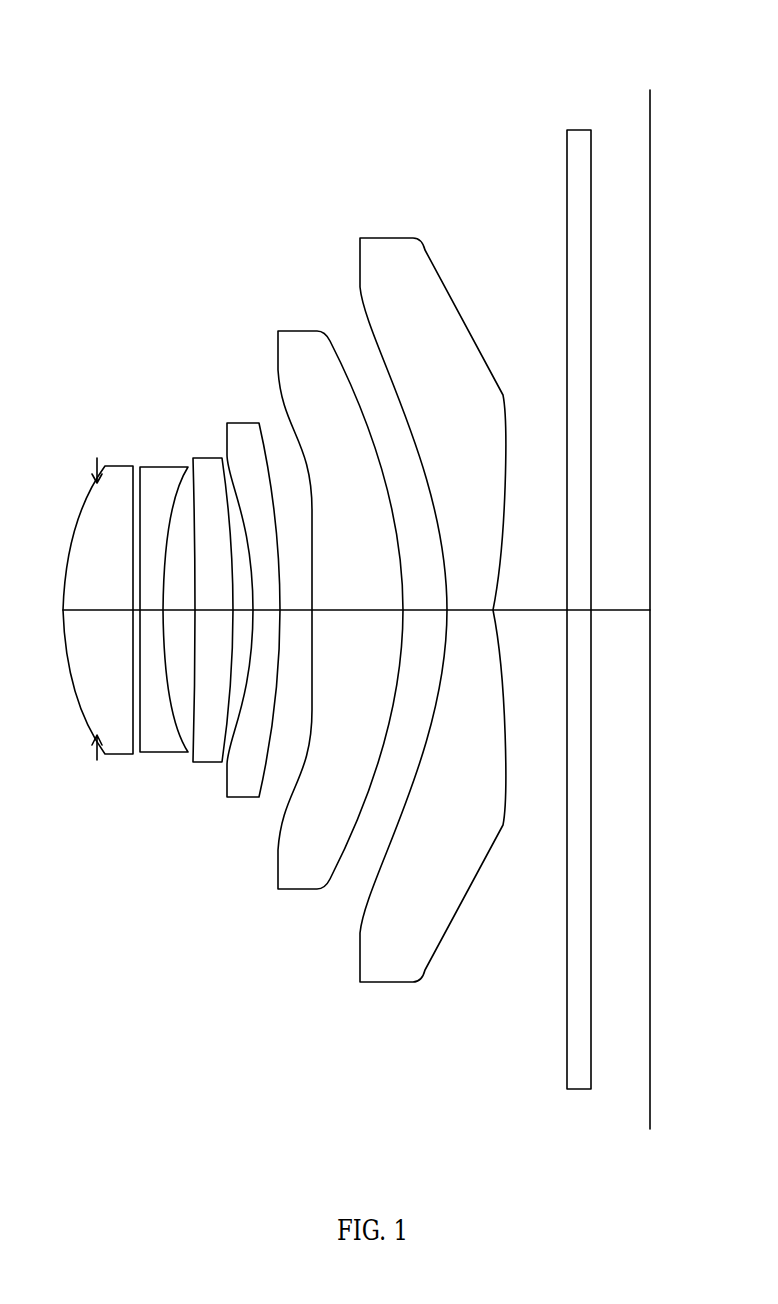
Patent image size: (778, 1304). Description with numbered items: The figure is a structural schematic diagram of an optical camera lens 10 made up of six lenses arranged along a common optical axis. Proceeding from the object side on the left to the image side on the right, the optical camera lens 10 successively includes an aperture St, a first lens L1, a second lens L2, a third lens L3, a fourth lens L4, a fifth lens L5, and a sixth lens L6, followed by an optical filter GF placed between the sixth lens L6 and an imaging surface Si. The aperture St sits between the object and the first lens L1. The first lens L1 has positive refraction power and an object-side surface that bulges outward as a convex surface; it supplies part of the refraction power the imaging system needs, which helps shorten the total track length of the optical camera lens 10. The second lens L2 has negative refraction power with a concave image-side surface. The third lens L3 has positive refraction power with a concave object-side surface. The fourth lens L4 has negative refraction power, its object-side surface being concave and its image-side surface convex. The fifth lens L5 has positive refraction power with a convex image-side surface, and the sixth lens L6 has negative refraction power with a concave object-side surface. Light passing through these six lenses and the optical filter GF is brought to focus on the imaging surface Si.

The optical camera lens 10 is at (356, 329).
The aperture St is at (72, 594).
The first lens L1 is at (100, 568).
The second lens L2 is at (163, 587).
The third lens L3 is at (205, 577).
The fourth lens L4 is at (253, 586).
The fifth lens L5 is at (340, 586).
The sixth lens L6 is at (432, 587).
The optical filter GF is at (568, 585).
The imaging surface Si is at (645, 579).